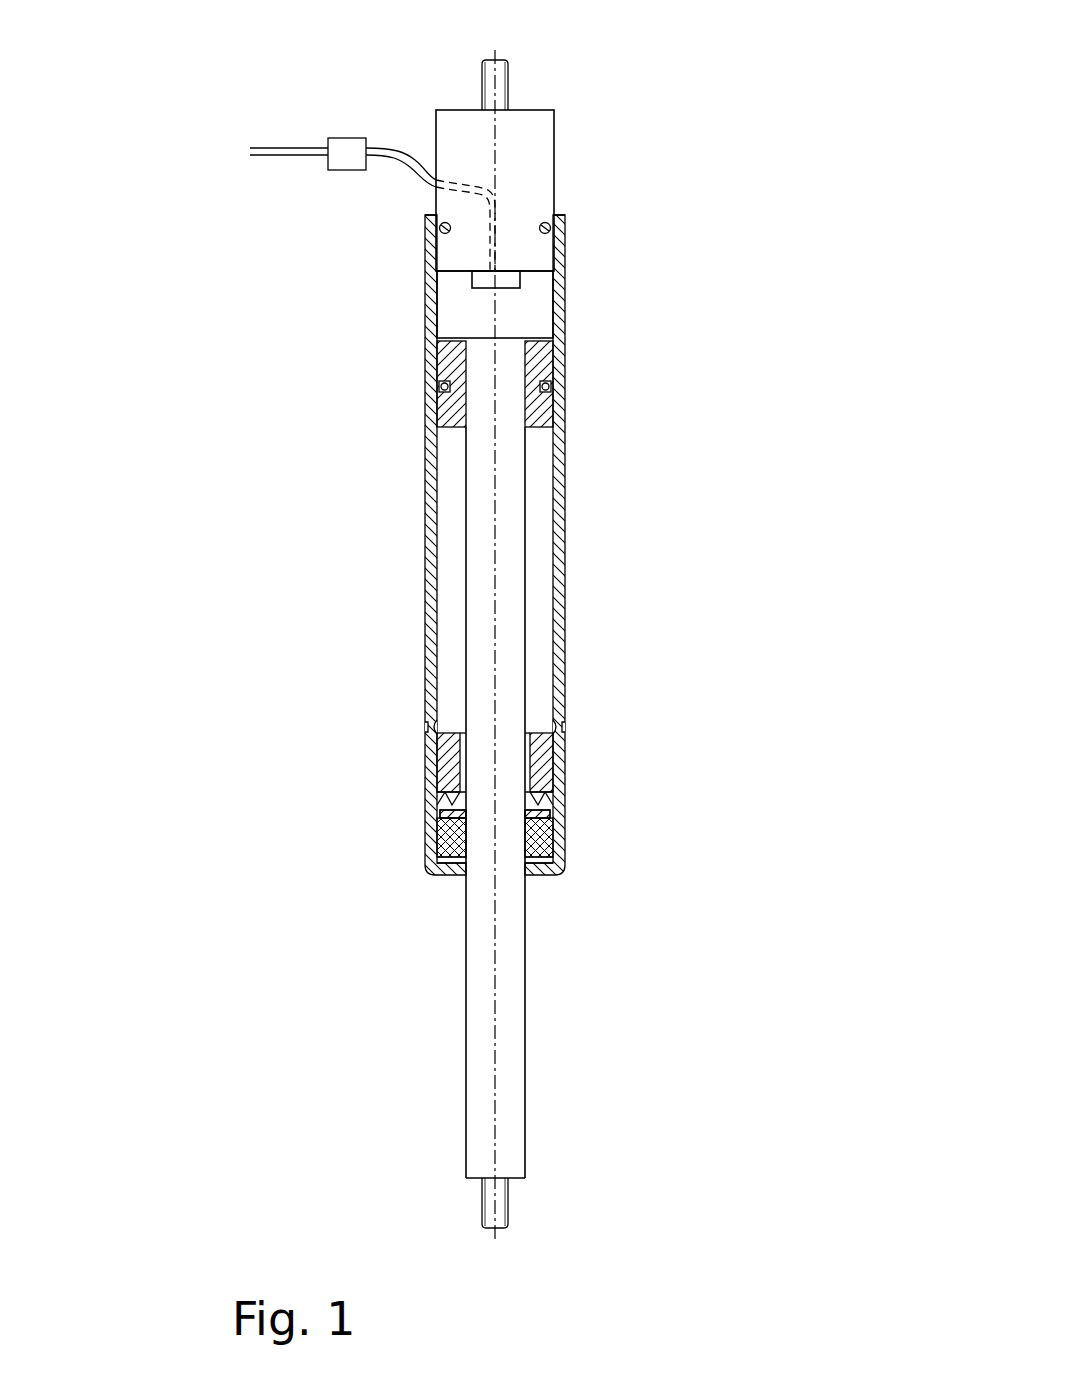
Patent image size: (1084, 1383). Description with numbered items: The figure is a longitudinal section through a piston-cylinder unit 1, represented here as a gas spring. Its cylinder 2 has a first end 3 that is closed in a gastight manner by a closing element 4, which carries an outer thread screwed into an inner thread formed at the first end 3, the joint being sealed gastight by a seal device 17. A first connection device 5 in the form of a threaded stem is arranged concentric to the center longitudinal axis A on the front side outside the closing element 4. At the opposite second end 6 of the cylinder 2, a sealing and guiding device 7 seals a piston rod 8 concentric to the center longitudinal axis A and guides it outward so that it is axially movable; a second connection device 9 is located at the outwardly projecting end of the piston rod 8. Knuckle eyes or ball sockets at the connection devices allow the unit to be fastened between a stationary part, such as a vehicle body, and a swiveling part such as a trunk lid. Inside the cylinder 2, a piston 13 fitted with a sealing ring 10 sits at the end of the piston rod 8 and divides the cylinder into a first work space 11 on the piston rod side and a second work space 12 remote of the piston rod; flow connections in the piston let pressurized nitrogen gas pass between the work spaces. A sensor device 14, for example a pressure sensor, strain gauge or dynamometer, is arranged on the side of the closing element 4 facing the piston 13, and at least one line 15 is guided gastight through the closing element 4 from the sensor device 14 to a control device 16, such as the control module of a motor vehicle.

The center longitudinal axis A is at (497, 53).
The piston-cylinder unit 1 is at (685, 462).
The cylinder 2 is at (558, 555).
The first end 3 is at (567, 218).
The closing element 4 is at (533, 147).
The first connection device 5 is at (501, 88).
The second end 6 is at (560, 866).
The sealing and guiding device 7 is at (635, 788).
The piston rod 8 is at (512, 995).
The second connection device 9 is at (502, 1217).
The sealing ring 10 is at (438, 386).
The first work space 11 is at (540, 670).
The second work space 12 is at (533, 312).
The piston 13 is at (445, 412).
The sensor device 14 is at (470, 281).
The line 15 is at (394, 152).
The control device 16 is at (345, 163).
The seal device 17 is at (438, 230).